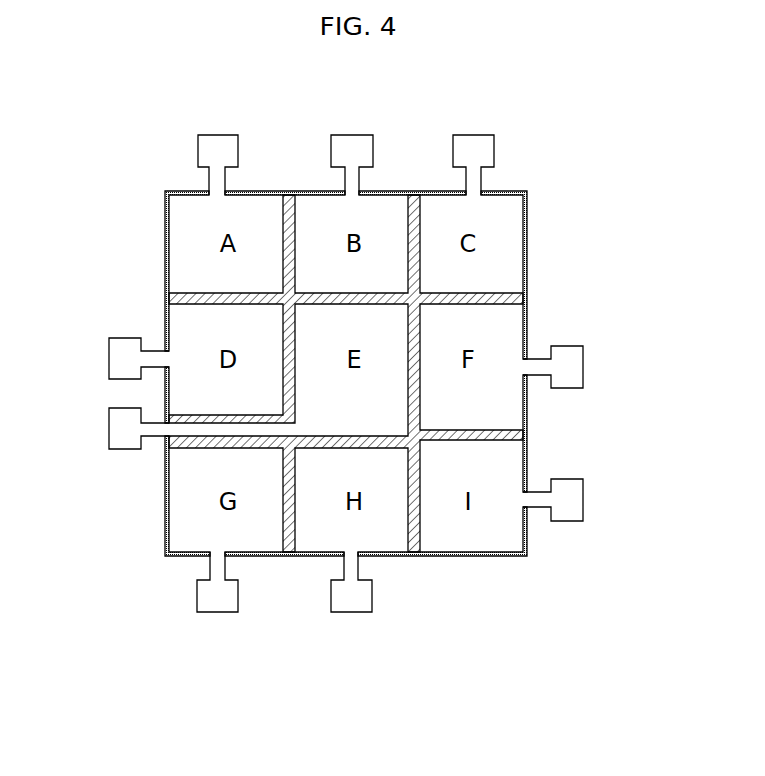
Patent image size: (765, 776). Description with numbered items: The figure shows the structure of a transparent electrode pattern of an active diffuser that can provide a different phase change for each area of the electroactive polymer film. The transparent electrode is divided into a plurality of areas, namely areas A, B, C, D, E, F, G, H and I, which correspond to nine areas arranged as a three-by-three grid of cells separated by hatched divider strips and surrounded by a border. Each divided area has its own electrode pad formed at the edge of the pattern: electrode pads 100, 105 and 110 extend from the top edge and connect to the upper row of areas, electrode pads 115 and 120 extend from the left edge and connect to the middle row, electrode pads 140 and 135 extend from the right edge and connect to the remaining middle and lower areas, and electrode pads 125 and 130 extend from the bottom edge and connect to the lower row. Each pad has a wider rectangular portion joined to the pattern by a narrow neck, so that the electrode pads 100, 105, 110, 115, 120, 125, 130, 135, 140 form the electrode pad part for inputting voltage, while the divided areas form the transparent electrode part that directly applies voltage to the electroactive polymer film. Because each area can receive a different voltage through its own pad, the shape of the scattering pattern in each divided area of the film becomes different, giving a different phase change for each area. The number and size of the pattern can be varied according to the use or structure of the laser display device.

The electrode pad 100 is at (215, 143).
The electrode pad 105 is at (348, 143).
The electrode pad 110 is at (472, 143).
The electrode pad 115 is at (117, 355).
The electrode pad 120 is at (117, 427).
The electrode pad 125 is at (219, 601).
The electrode pad 130 is at (353, 601).
The electrode pad 135 is at (573, 500).
The electrode pad 140 is at (573, 368).